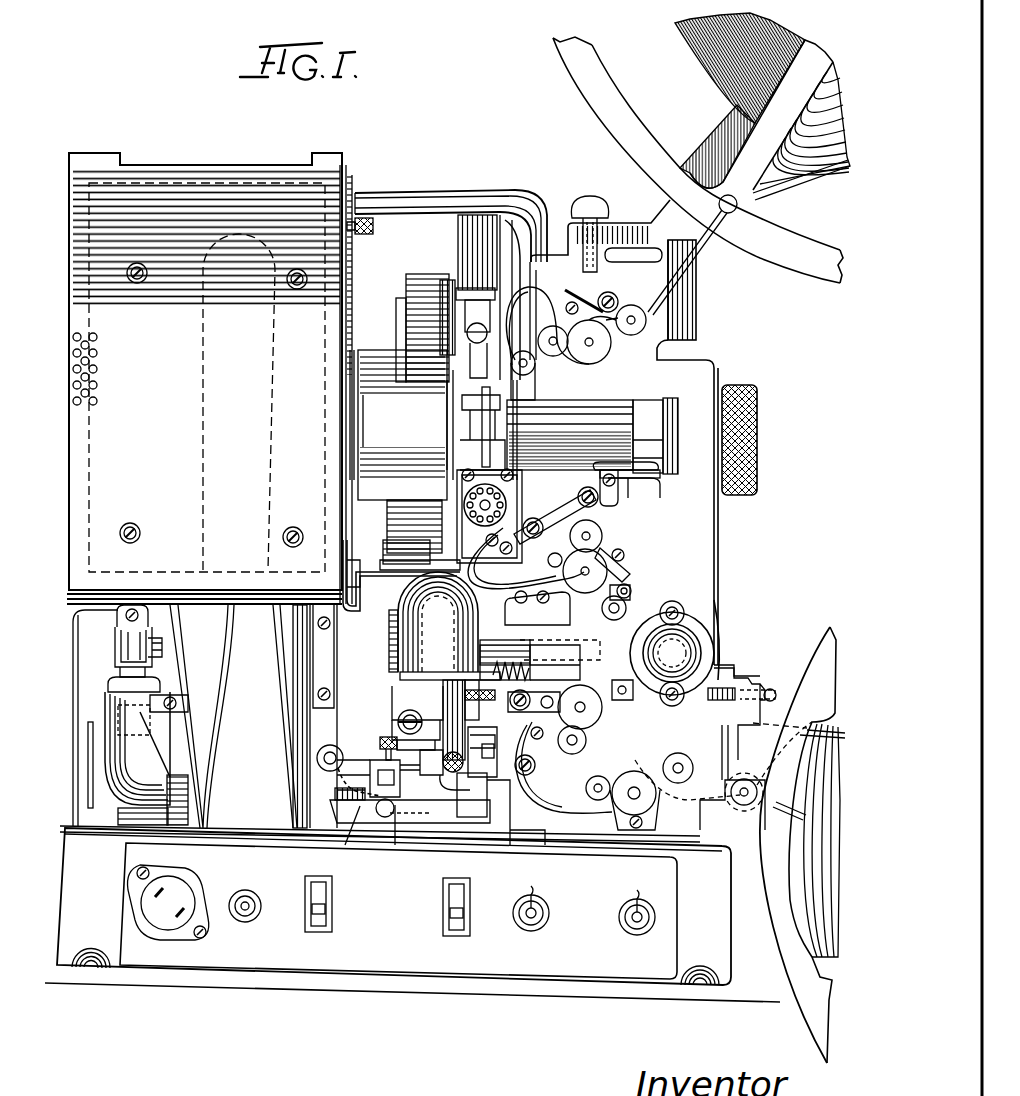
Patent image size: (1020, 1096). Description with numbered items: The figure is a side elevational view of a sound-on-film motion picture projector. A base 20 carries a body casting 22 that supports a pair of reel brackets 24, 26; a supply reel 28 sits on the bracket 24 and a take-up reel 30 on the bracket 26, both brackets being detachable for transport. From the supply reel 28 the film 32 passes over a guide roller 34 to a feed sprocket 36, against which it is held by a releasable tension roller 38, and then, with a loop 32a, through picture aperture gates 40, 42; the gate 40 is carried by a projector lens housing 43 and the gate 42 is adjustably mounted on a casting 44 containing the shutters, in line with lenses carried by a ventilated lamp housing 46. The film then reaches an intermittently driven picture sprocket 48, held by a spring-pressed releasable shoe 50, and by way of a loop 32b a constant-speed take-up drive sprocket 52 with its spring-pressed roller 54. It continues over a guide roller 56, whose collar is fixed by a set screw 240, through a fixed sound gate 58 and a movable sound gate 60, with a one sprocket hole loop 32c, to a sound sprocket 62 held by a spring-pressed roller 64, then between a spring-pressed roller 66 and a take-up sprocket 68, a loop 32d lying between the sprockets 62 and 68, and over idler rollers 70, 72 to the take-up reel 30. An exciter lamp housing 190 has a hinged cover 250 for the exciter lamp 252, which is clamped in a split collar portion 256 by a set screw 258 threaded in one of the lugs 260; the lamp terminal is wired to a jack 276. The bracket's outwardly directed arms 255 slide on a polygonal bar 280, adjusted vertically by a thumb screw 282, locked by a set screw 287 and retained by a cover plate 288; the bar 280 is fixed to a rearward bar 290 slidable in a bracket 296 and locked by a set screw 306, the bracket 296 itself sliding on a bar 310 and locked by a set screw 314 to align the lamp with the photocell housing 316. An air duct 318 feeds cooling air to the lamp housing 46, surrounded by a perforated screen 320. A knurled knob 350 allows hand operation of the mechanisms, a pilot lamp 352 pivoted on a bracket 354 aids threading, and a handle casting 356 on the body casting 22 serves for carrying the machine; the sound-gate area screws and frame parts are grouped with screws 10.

The frame screws 10 is at (562, 626).
The base 20 is at (100, 950).
The body casting 22 is at (716, 529).
The reel bracket 24 is at (684, 300).
The reel bracket 26 is at (746, 684).
The supply reel 28 is at (578, 90).
The take-up reel 30 is at (800, 1000).
The film 32 is at (790, 183).
The loop 32a is at (530, 300).
The loop 32b is at (526, 571).
The one sprocket hole loop 32c is at (602, 548).
The loop 32d is at (548, 792).
The guide roller 34 is at (647, 320).
The feed sprocket 36 is at (600, 352).
The releasable tension roller 38 is at (552, 356).
The picture aperture gate 40 is at (522, 420).
The picture aperture gate 42 is at (518, 436).
The projector lens housing 43 is at (618, 473).
The casting 44 is at (420, 280).
The ventilated lamp housing 46 is at (353, 192).
The picture sprocket 48 is at (505, 508).
The spring-pressed releasable shoe 50 is at (514, 545).
The take-up drive sprocket 52 is at (605, 572).
The spring-pressed roller 54 is at (592, 530).
The guide roller 56 is at (625, 608).
The fixed light aperture sound gate 58 is at (606, 608).
The movable light aperture sound gate 60 is at (620, 689).
The sound sprocket 62 is at (602, 708).
The spring-pressed roller 64 is at (587, 742).
The spring-pressed roller 66 is at (590, 786).
The take-up sprocket 68 is at (635, 787).
The idler roller 70 is at (682, 756).
The idler roller 72 is at (745, 778).
The exciter lamp housing 190 is at (390, 582).
The set screw 240 is at (625, 588).
The hinged cover 250 is at (398, 636).
The exciter lamp 252 is at (400, 658).
The outwardly directed arms 255 is at (480, 733).
The split collar portion 256 is at (432, 718).
The set screw 258 is at (408, 712).
The flanges or lugs 260 is at (398, 734).
The jack 276 is at (320, 760).
The polygonal bar 280 is at (482, 795).
The thumb screw 282 is at (472, 678).
The set screw 287 is at (454, 770).
The cover plate 288 is at (492, 752).
The bar 290 is at (445, 822).
The bracket 296 is at (372, 826).
The set screw 306 is at (396, 840).
The bar 310 is at (376, 778).
The set screw 314 is at (380, 742).
The housing 316 is at (680, 650).
The air duct 318 is at (275, 750).
The perforated screen 320 is at (100, 153).
The knurled knob 350 is at (760, 410).
The pilot lamp 352 is at (177, 746).
The bracket 354 is at (118, 618).
The handle casting 356 is at (430, 196).